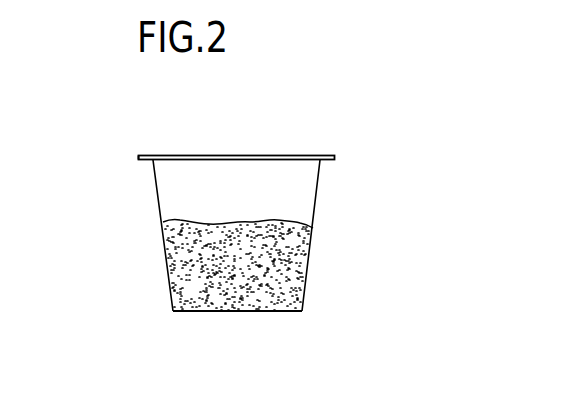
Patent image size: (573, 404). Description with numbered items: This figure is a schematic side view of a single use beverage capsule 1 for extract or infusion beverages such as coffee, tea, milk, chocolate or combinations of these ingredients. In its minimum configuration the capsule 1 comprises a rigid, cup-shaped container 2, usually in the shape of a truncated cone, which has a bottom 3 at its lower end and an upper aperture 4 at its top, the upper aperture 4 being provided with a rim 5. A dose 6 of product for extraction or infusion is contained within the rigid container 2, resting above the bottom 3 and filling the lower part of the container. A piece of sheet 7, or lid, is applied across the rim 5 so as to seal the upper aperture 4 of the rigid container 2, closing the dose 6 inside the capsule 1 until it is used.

The single use beverage capsule 1 is at (351, 242).
The rigid, cup-shaped container 2 is at (317, 191).
The bottom 3 is at (228, 312).
The upper aperture 4 is at (267, 151).
The rim 5 is at (145, 162).
The dose of product 6 is at (213, 250).
The piece of sheet 7 is at (165, 155).